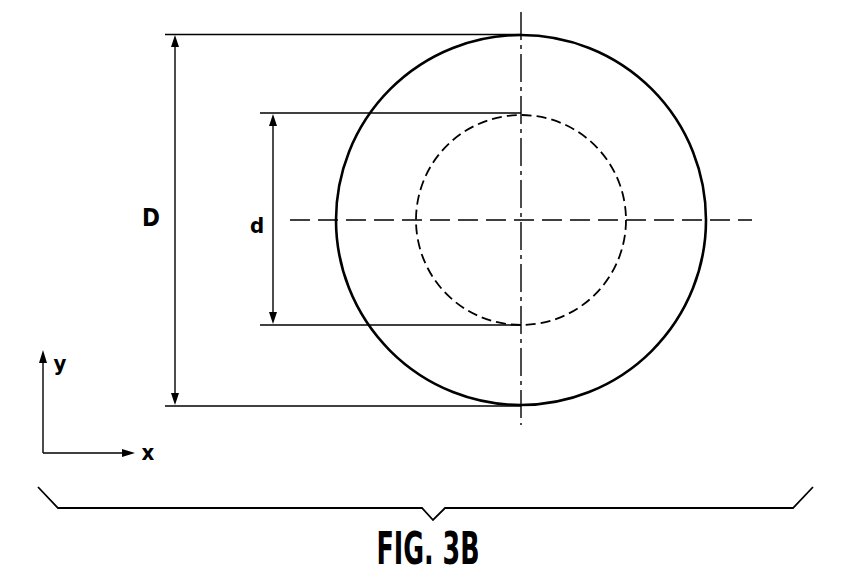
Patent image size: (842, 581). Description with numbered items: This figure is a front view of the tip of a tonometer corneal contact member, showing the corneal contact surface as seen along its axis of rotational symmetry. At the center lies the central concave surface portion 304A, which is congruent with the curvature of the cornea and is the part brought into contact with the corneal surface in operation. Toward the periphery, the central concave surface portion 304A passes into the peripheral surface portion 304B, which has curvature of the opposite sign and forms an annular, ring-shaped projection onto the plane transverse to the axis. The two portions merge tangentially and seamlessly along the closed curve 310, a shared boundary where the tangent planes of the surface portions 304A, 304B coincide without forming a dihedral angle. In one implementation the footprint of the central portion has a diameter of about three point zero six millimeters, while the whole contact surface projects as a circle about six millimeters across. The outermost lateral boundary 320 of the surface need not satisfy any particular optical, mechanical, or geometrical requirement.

The closed curve 310 is at (620, 178).
The central concave surface portion 304A is at (563, 292).
The peripheral surface portion 304B is at (650, 297).
The lateral boundary 320 is at (509, 406).